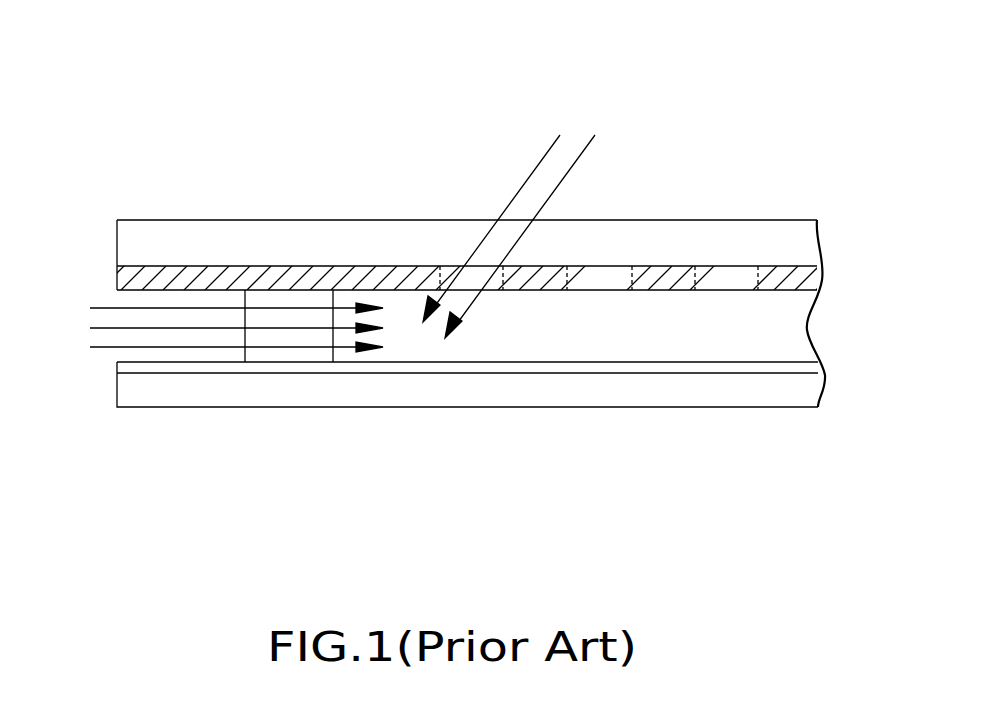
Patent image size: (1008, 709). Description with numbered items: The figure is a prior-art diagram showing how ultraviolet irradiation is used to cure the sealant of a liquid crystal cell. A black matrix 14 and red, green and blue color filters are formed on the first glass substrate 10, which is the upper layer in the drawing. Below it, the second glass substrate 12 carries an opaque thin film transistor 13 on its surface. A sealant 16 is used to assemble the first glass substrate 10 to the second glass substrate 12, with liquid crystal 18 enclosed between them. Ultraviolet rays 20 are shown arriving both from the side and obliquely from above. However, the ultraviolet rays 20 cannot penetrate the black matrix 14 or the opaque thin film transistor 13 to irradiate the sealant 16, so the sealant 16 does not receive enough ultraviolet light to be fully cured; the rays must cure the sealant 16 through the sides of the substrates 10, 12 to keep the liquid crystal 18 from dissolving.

The first glass substrate 10 is at (226, 253).
The second glass substrate 12 is at (608, 402).
The opaque thin film transistor 13 is at (125, 366).
The black matrix 14 is at (453, 267).
The sealant 16 is at (292, 352).
The liquid crystal 18 is at (608, 338).
The incident light 20 is at (628, 72).